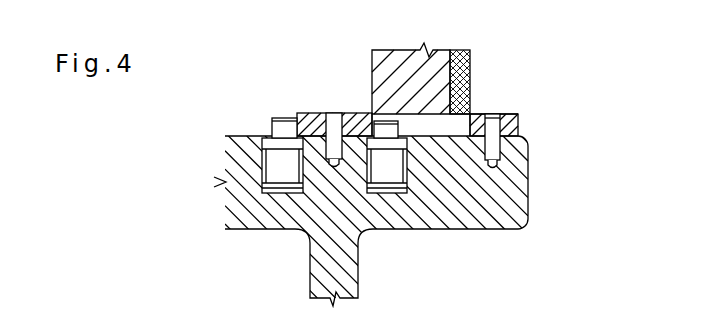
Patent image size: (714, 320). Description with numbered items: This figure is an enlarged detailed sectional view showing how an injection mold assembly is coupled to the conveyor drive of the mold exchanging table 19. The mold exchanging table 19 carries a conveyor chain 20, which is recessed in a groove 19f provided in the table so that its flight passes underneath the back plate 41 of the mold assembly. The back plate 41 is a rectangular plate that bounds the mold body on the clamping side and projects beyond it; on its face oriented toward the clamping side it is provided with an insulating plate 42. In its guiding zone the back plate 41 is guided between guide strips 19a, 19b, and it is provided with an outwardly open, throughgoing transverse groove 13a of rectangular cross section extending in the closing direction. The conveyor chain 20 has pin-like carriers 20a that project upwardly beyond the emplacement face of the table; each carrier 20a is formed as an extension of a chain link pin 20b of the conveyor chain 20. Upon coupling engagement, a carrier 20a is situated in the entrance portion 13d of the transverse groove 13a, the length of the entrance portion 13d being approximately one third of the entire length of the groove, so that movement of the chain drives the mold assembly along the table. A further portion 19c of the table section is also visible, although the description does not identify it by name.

The mold exchanging table 19 is at (528, 204).
The guide strip 19a is at (365, 118).
The guide strip 19b is at (516, 125).
The leg portion 19c is at (327, 263).
The groove 19f is at (263, 172).
The conveyor chain 20 is at (263, 157).
The carrier 20a is at (282, 127).
The chain link pin 20b is at (390, 172).
The back plate 41 is at (430, 50).
The insulating plate 42 is at (470, 56).
The transverse groove 13a is at (407, 130).
The entrance portion 13d is at (442, 124).